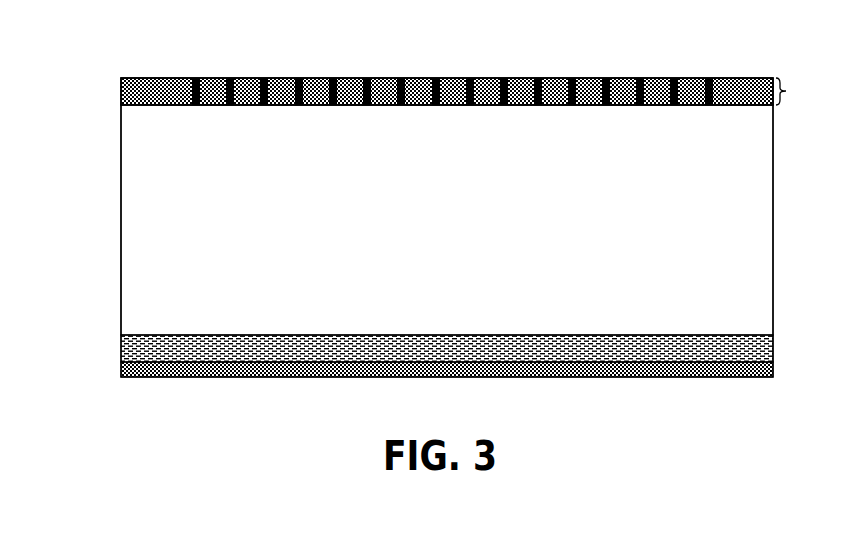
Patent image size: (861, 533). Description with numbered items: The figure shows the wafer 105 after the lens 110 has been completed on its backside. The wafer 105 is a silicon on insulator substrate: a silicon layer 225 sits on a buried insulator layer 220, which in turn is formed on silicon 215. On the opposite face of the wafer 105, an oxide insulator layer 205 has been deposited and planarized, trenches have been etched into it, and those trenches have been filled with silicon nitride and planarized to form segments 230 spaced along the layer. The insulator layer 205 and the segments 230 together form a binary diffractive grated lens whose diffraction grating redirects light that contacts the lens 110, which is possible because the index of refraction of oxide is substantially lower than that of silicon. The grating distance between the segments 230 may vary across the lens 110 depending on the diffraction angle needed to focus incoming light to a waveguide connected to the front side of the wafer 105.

The wafer 105 is at (108, 26).
The lens 110 is at (786, 91).
The insulator layer 205 is at (134, 92).
The silicon 215 is at (152, 240).
The buried insulator layer 220 is at (150, 354).
The silicon layer 225 is at (121, 367).
The segments 230 is at (193, 78).